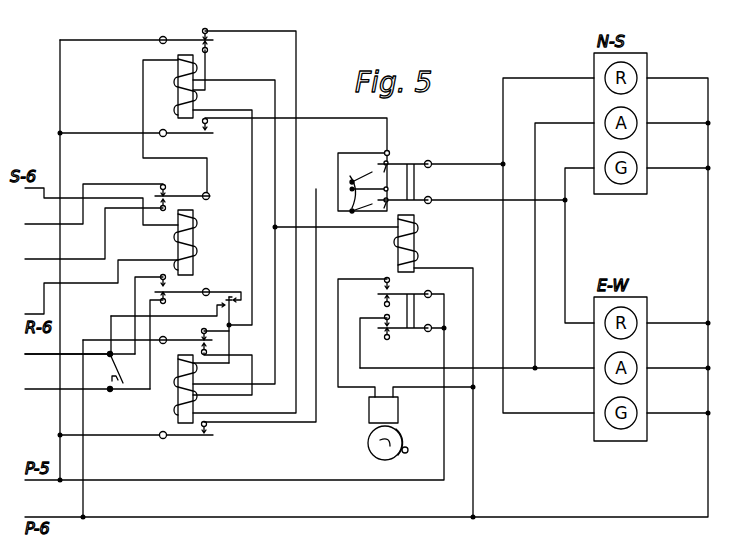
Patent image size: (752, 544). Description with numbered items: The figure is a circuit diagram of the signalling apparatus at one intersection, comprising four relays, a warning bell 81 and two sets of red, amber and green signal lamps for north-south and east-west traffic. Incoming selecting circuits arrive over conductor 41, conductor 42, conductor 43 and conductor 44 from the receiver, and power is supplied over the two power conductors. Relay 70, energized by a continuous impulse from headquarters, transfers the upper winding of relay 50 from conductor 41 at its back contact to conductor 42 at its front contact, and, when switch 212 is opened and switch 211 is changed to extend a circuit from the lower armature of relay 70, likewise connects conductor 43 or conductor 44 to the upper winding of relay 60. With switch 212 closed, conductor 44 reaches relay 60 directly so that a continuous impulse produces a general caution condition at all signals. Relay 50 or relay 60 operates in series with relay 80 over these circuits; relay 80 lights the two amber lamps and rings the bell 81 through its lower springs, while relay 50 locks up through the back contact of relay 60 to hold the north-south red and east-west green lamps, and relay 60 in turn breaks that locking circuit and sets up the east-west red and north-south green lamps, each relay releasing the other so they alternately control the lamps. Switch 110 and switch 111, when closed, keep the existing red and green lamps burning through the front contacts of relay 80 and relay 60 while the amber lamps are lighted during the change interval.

The relay 50 is at (153, 80).
The relay 70 is at (189, 244).
The relay 60 is at (147, 381).
The relay 80 is at (420, 277).
The warning bell 81 is at (367, 428).
The switch 110 is at (358, 162).
The switch 111 is at (342, 180).
The switch 211 is at (171, 330).
The switch 212 is at (105, 360).
The conductor 41 is at (87, 204).
The conductor 42 is at (89, 233).
The conductor 43 is at (66, 366).
The conductor 44 is at (85, 401).